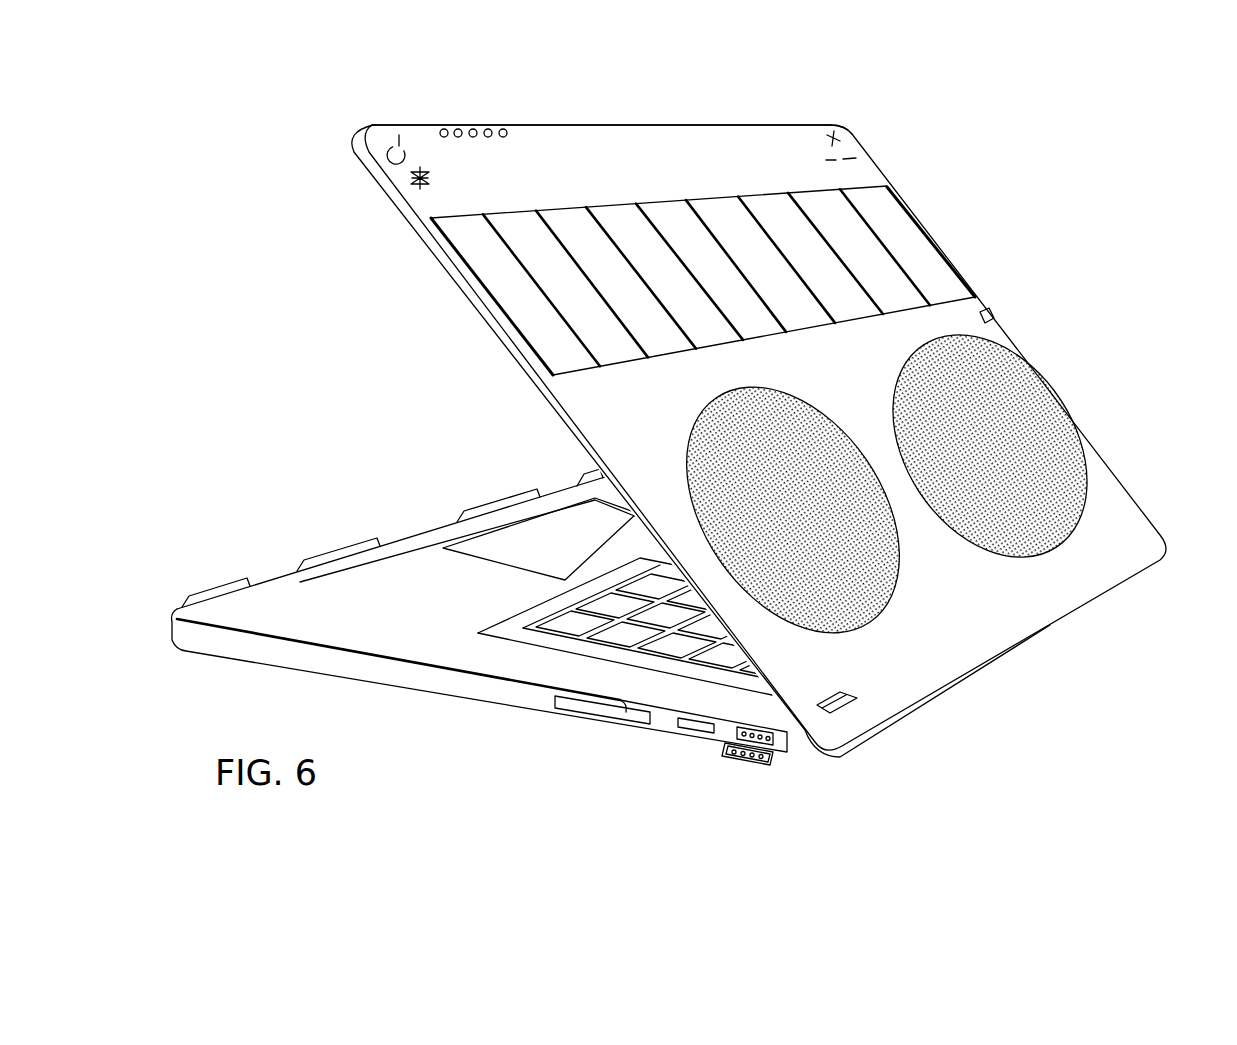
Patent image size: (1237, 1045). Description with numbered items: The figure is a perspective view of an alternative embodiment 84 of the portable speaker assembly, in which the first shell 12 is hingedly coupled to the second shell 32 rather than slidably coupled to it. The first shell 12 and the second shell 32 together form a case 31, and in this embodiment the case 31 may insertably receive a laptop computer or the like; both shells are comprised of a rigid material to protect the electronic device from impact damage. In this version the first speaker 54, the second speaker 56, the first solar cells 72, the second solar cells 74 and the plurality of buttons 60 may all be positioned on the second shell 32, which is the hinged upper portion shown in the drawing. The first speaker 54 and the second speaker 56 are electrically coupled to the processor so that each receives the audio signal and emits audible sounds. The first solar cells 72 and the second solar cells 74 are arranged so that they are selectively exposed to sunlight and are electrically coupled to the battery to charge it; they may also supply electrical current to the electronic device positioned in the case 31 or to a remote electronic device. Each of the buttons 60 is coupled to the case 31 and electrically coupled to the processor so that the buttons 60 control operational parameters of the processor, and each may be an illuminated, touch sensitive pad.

The first shell 12 is at (740, 125).
The case 31 is at (847, 122).
The second shell 32 is at (277, 665).
The first speaker 54 is at (997, 343).
The second speaker 56 is at (692, 427).
The buttons 60 is at (422, 168).
The first solar cells 72 is at (540, 214).
The second solar cells 74 is at (862, 188).
The alternative embodiment 84 is at (623, 123).